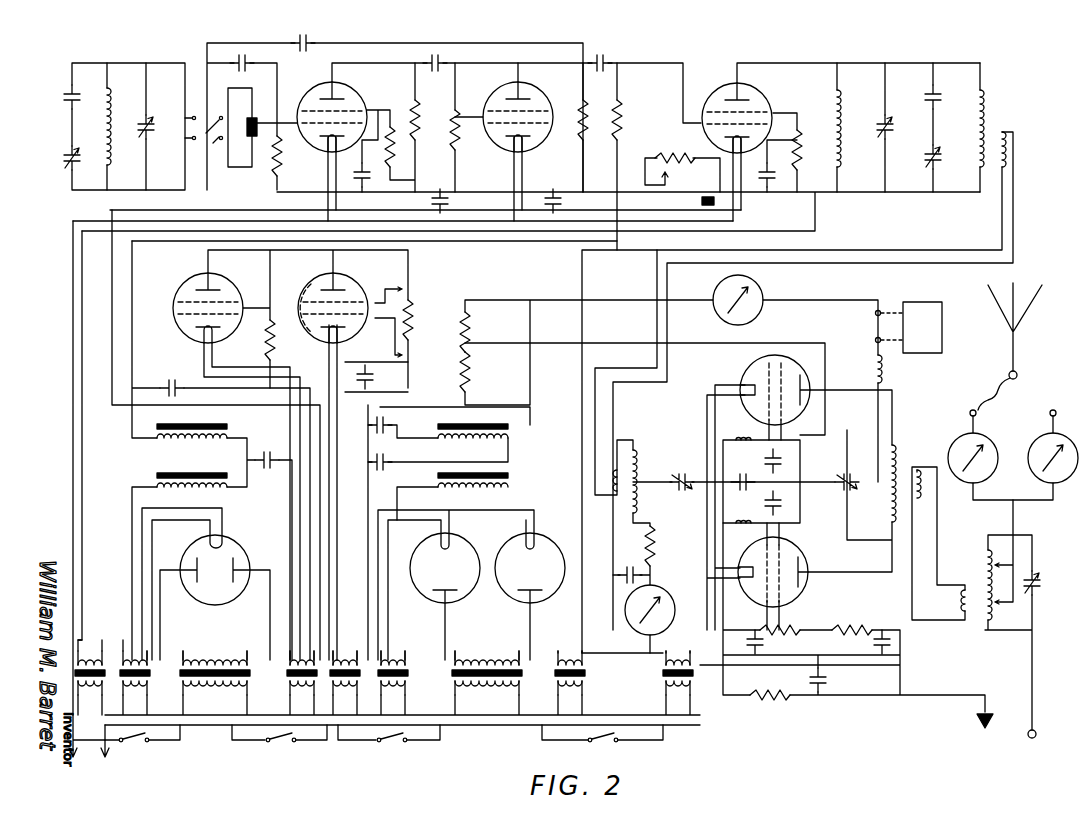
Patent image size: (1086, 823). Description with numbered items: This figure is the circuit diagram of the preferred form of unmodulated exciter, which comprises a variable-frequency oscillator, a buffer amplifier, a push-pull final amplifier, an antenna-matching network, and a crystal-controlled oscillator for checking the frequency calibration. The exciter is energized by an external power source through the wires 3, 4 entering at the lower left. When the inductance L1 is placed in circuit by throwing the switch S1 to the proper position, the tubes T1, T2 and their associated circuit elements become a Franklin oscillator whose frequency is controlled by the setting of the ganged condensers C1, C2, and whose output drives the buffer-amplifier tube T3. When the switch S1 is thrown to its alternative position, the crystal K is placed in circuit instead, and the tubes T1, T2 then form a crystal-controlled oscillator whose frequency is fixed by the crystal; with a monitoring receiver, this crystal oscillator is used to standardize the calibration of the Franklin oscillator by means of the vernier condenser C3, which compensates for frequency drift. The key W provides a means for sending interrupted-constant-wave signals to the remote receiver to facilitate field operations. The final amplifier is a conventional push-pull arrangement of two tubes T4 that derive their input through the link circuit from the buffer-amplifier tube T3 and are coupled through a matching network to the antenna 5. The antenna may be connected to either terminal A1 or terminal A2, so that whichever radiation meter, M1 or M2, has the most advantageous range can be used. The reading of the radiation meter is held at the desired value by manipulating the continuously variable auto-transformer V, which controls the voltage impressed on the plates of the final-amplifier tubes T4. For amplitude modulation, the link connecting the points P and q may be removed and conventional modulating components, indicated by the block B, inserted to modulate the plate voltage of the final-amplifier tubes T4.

The inductance L1 is at (104, 128).
The ganged condenser C1 is at (65, 165).
The vernier condenser C3 is at (152, 138).
The switch S1 is at (206, 118).
The crystal K is at (257, 120).
The tube T1 is at (352, 104).
The tube T2 is at (538, 102).
The buffer-amplifier tube T3 is at (764, 102).
The ganged condenser C2 is at (930, 152).
The key W is at (672, 170).
The final-amplifier tubes T4 is at (806, 590).
The link point P is at (875, 314).
The link point q is at (875, 341).
The modulating components B is at (922, 327).
The antenna 5 is at (1028, 312).
The terminal A1 is at (969, 411).
The terminal A2 is at (1050, 411).
The radiation meter M1 is at (956, 446).
The radiation meter M2 is at (1036, 446).
The continuously variable auto-transformer V is at (590, 678).
The wire 3 is at (85, 749).
The wire 4 is at (104, 754).